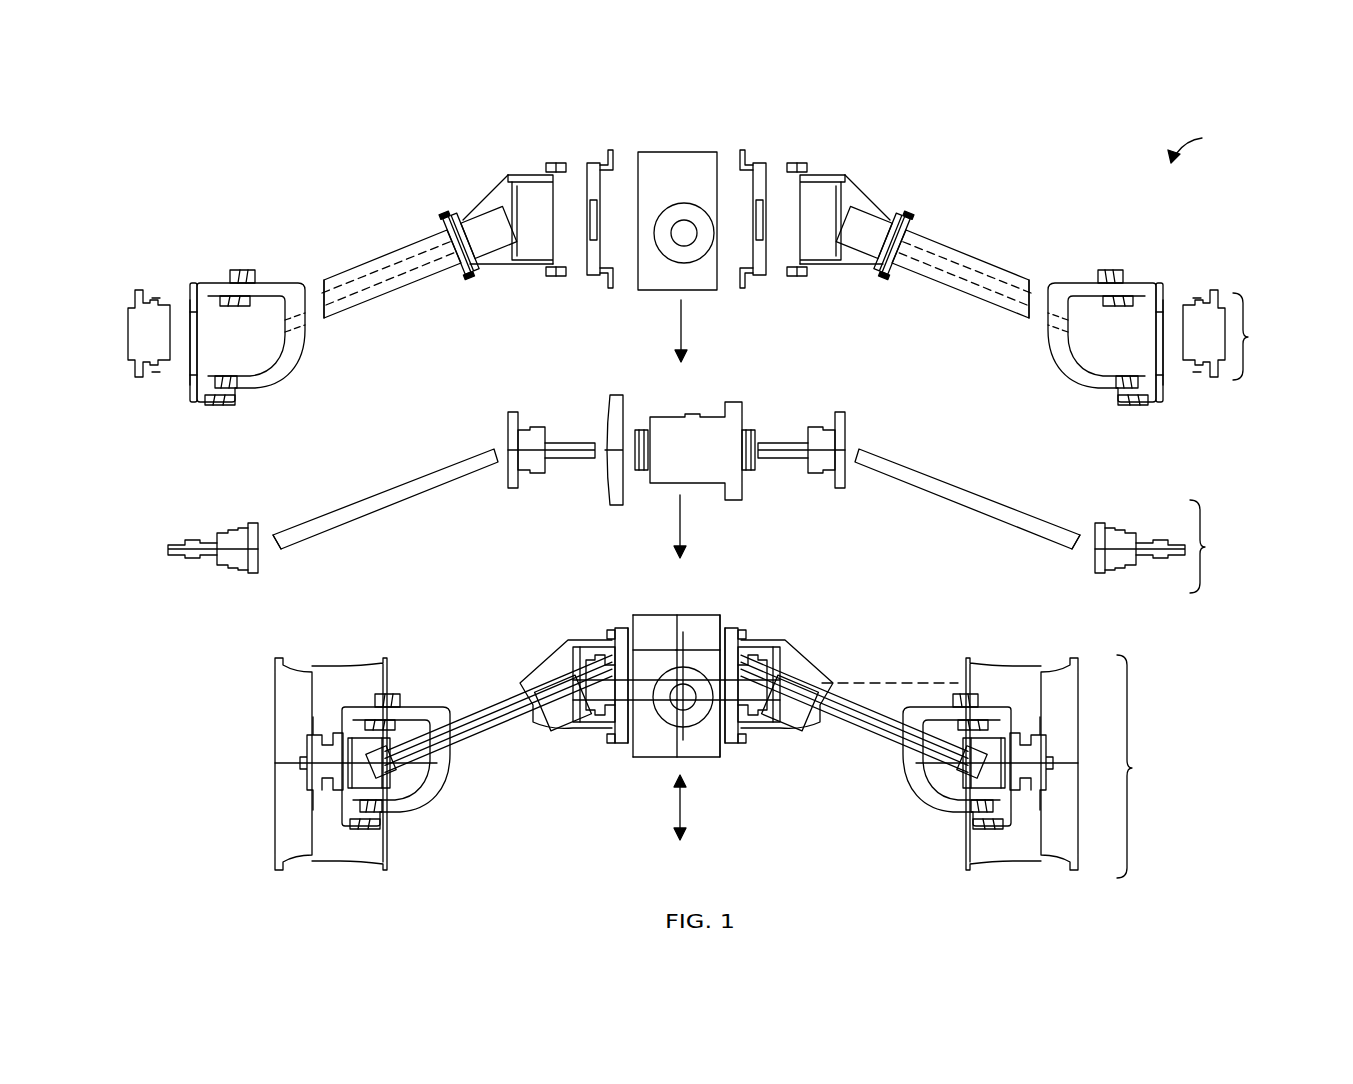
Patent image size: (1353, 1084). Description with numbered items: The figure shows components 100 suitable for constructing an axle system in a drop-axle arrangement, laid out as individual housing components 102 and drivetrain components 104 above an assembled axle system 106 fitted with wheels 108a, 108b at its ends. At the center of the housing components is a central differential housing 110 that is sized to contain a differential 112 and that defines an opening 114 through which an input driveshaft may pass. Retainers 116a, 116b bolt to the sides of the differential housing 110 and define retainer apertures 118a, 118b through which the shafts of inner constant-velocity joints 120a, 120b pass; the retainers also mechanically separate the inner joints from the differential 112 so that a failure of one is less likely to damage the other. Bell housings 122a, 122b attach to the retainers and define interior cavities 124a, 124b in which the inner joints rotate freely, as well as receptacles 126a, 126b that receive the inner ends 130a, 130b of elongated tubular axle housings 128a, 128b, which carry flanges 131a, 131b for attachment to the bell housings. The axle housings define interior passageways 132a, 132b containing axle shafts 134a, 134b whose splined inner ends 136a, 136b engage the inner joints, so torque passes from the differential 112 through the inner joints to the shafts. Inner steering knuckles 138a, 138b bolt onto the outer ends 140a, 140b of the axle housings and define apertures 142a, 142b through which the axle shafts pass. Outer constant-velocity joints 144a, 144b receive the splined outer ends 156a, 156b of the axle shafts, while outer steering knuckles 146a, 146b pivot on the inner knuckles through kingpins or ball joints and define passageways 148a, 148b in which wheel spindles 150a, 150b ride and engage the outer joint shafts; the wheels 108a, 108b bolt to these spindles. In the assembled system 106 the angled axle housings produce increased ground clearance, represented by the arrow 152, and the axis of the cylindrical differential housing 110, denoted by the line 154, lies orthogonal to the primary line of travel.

The components 100 is at (1188, 136).
The housing components 102 is at (1255, 336).
The drivetrain components 104 is at (1213, 546).
The assembled axle system 106 is at (1142, 766).
The wheel 108a is at (1003, 860).
The wheel 108b is at (335, 860).
The central differential housing 110 is at (672, 152).
The differential 112 is at (718, 500).
The opening 114 is at (695, 215).
The retainer 116a is at (765, 163).
The retainer 116b is at (596, 163).
The retainer aperture 118a is at (760, 220).
The retainer aperture 118b is at (593, 220).
The inner constant-velocity joint 120a is at (812, 468).
The inner constant-velocity joint 120b is at (545, 465).
The bell housing 122a is at (845, 175).
The bell housing 122b is at (470, 210).
The interior cavity 124a is at (825, 200).
The interior cavity 124b is at (522, 205).
The receptacle 126a is at (878, 230).
The receptacle 126b is at (478, 228).
The axle housing 128a is at (1000, 270).
The axle housing 128b is at (352, 270).
The inner end 130a is at (895, 264).
The inner end 130b is at (447, 264).
The flange 131a is at (905, 232).
The flange 131b is at (448, 232).
The interior passageway 132a is at (975, 290).
The interior passageway 132b is at (360, 290).
The axle shaft 134a is at (950, 498).
The axle shaft 134b is at (372, 510).
The inner end 136a is at (858, 465).
The inner end 136b is at (492, 465).
The inner steering knuckle 138a is at (1075, 283).
The inner steering knuckle 138b is at (272, 283).
The outer end 140a is at (1029, 320).
The outer end 140b is at (328, 320).
The aperture 142a is at (1068, 300).
The aperture 142b is at (290, 318).
The outer constant-velocity joint 144a is at (1110, 573).
The outer constant-velocity joint 144b is at (198, 555).
The outer steering knuckle 146a is at (1160, 283).
The outer steering knuckle 146b is at (218, 283).
The passageway 148a is at (1166, 322).
The passageway 148b is at (193, 298).
The wheel spindle 150a is at (1218, 370).
The wheel spindle 150b is at (140, 365).
The arrow 152 is at (682, 808).
The line 154 is at (878, 683).
The outer end 156a is at (1066, 548).
The outer end 156b is at (282, 548).